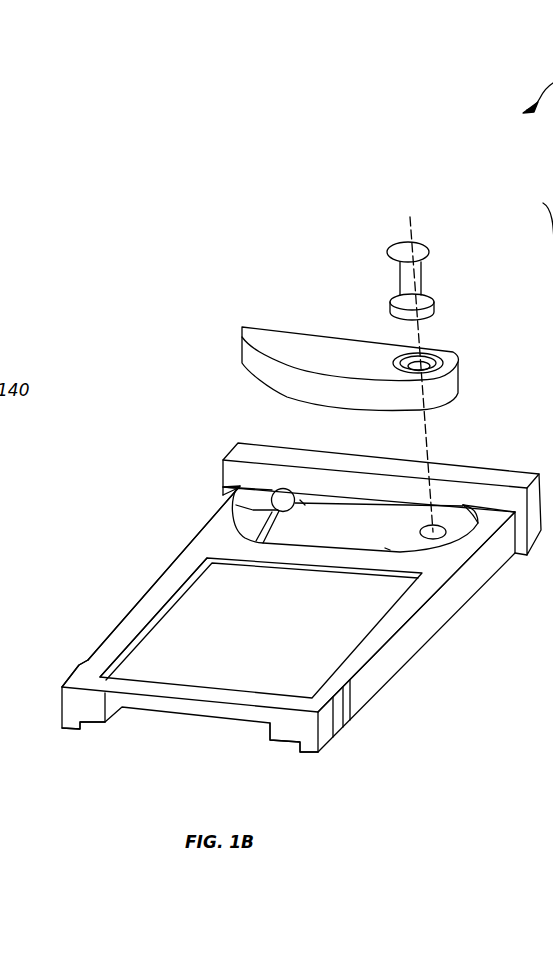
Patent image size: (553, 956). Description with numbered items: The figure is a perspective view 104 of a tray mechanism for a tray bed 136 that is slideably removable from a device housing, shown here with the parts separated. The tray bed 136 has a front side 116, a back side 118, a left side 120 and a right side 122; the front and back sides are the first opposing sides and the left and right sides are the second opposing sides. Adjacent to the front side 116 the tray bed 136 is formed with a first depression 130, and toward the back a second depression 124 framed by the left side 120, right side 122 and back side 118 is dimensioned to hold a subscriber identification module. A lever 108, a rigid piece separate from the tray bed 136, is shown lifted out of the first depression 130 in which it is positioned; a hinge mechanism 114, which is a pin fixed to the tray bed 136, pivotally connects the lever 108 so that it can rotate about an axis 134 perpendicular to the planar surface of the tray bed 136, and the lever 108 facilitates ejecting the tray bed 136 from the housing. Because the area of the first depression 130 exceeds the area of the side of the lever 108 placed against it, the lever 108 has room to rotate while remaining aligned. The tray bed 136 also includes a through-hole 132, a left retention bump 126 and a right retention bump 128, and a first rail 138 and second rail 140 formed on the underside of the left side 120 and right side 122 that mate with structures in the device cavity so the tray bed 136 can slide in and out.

The perspective view of tray mechanism 104 is at (440, 707).
The lever 108 is at (288, 340).
The hinge mechanism 114 is at (410, 240).
The front side 116 is at (343, 462).
The back side 118 is at (213, 697).
The left side 120 is at (135, 610).
The right side 122 is at (381, 634).
The second depression 124 is at (203, 623).
The left retention bump 126 is at (78, 666).
The right retention bump 128 is at (345, 715).
The first depression 130 is at (327, 517).
The through-hole 132 is at (270, 487).
The axis 134 is at (427, 432).
The tray bed 136 is at (383, 563).
The first rail 138 is at (93, 722).
The second rail 140 is at (282, 730).